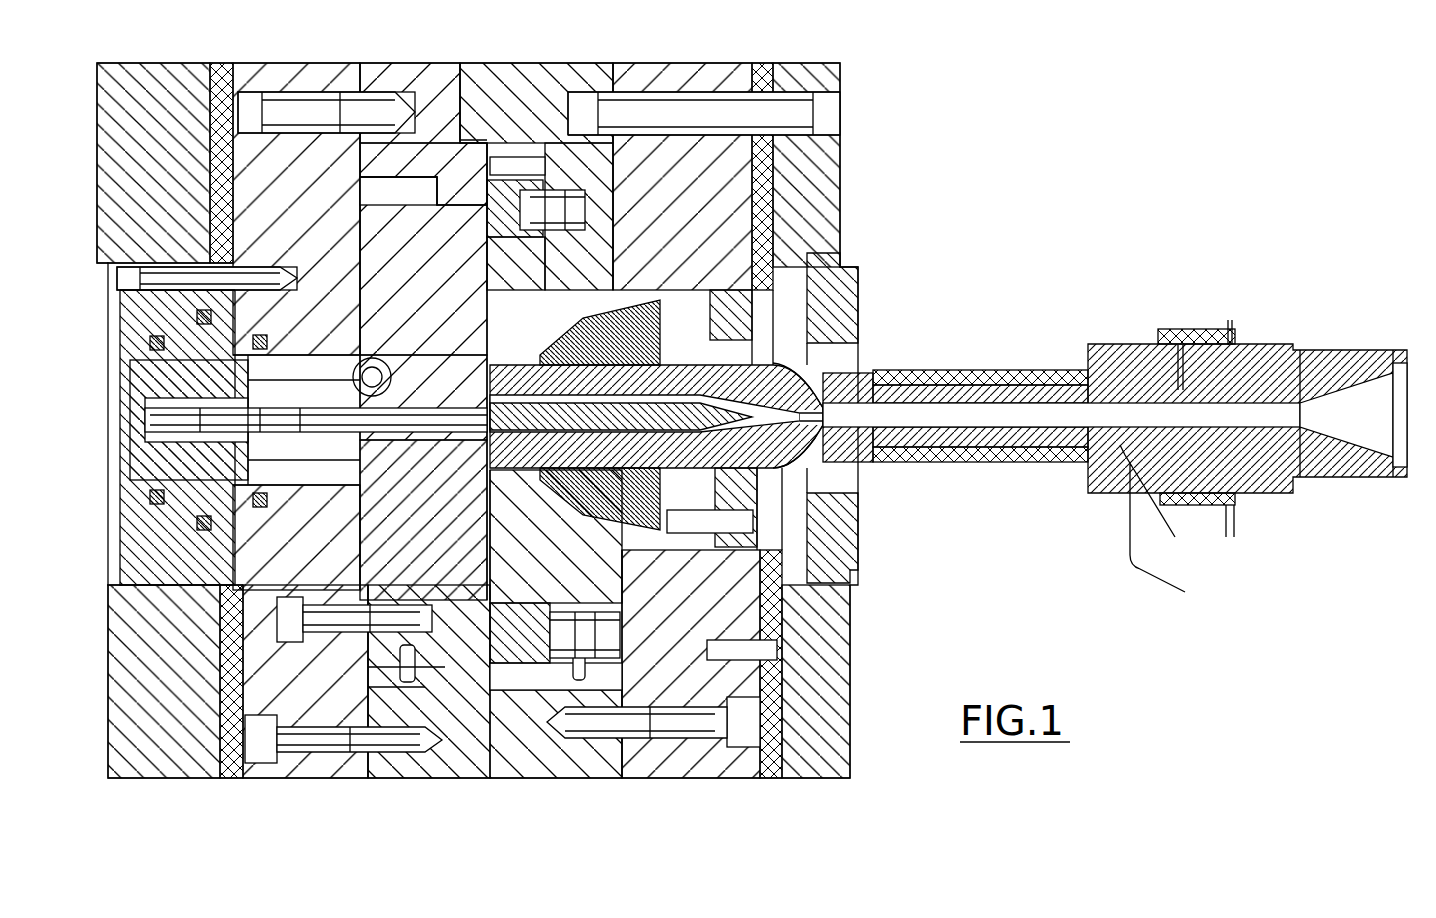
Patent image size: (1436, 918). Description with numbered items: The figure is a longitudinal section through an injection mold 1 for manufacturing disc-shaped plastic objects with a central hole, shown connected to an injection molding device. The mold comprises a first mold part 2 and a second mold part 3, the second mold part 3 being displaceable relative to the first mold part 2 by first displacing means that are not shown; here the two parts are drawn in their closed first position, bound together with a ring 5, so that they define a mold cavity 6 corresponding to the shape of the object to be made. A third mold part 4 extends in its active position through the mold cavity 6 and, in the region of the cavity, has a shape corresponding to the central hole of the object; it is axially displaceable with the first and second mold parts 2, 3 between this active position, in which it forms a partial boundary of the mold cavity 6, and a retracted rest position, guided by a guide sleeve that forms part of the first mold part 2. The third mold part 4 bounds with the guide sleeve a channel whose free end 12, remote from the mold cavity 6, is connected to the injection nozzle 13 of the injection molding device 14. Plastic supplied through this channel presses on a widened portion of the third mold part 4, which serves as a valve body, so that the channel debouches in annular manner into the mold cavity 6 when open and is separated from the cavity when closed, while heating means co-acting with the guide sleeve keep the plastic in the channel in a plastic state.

The injection mold 1 is at (855, 179).
The first mold part 2 is at (578, 183).
The second mold part 3 is at (405, 210).
The third mold part 4 is at (640, 400).
The ring 5 is at (535, 645).
The mold cavity 6 is at (490, 548).
The free end 12 is at (785, 420).
The injection nozzle 13 is at (822, 388).
The injection molding device 14 is at (1250, 312).